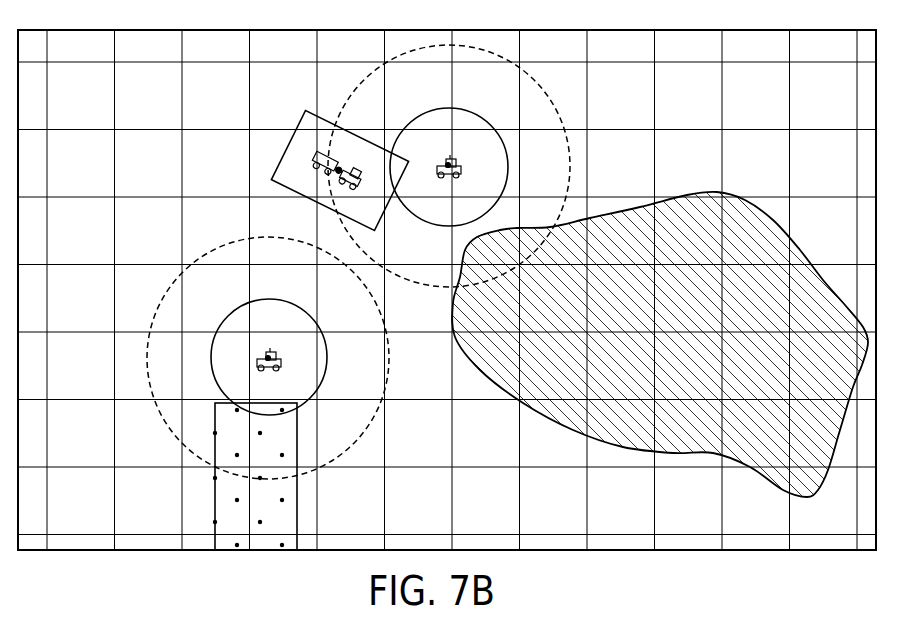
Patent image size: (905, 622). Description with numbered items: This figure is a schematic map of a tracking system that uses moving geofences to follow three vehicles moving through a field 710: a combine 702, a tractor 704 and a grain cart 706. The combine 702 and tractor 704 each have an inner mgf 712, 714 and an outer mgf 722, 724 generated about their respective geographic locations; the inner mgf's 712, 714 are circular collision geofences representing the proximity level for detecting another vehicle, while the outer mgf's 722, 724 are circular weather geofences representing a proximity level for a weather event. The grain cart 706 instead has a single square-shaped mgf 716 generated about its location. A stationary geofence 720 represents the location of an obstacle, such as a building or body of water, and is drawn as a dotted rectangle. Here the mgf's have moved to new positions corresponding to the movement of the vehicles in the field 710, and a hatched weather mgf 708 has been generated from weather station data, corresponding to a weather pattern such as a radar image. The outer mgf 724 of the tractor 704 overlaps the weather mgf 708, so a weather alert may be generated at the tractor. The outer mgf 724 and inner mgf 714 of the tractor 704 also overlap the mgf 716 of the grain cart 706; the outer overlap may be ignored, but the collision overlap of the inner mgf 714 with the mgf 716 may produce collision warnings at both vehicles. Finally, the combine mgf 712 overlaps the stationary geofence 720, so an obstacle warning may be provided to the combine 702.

The combine 702 is at (272, 355).
The tractor 704 is at (440, 166).
The grain cart 706 is at (340, 171).
The weather mgf 708 is at (717, 191).
The field 710 is at (427, 29).
The inner mgf 712 is at (210, 368).
The inner mgf 714 is at (450, 108).
The mgf 716 is at (288, 145).
The stationary geofence 720 is at (297, 514).
The outer mgf 722 is at (203, 255).
The outer mgf 724 is at (580, 106).